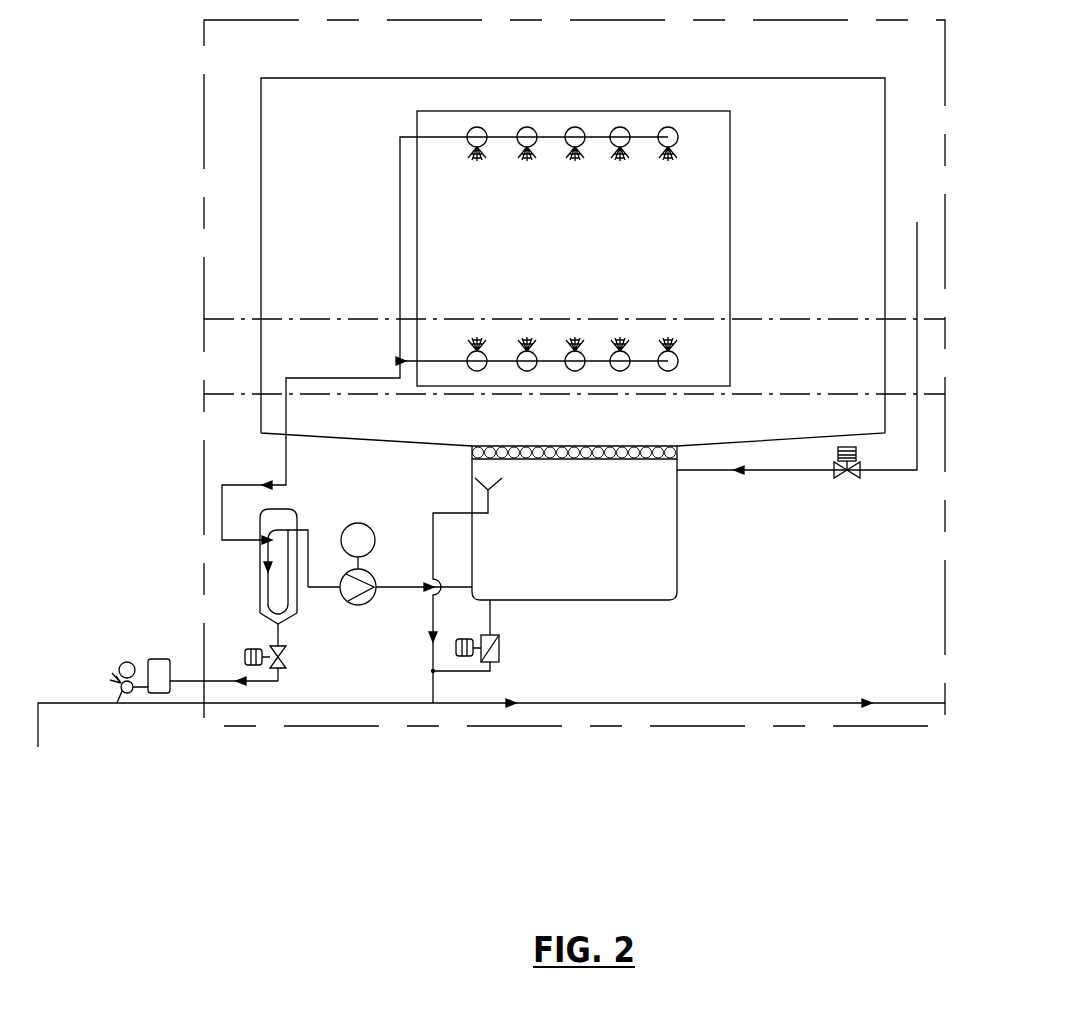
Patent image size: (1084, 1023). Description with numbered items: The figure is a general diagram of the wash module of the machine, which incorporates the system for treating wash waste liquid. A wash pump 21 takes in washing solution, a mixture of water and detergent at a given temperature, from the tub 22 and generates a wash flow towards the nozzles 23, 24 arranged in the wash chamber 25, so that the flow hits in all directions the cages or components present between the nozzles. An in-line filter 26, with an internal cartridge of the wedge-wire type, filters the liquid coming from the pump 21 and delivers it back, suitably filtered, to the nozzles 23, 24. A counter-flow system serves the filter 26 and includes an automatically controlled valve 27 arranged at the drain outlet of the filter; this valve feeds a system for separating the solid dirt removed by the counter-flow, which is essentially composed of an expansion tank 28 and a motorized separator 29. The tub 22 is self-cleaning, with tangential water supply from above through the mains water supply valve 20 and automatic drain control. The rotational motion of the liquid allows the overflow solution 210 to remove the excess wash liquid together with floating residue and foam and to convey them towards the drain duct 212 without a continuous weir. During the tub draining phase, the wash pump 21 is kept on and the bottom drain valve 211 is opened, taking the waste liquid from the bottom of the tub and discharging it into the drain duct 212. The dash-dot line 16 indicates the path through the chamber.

The conveying plane 16 is at (326, 319).
The mains water supply valve 20 is at (573, 325).
The wash pump 21 is at (372, 606).
The tub 22 is at (635, 542).
The nozzles 23 is at (677, 130).
The nozzles 24 is at (679, 355).
The wash chamber 25 is at (670, 258).
The in-line filter 26 is at (280, 553).
The automatically controlled valve 27 is at (283, 660).
The expansion tank 28 is at (164, 673).
The motorized separator 29 is at (117, 702).
The solution for removing residue and foam 210 is at (488, 490).
The bottom drain valve 211 is at (500, 650).
The drain duct 212 is at (757, 704).